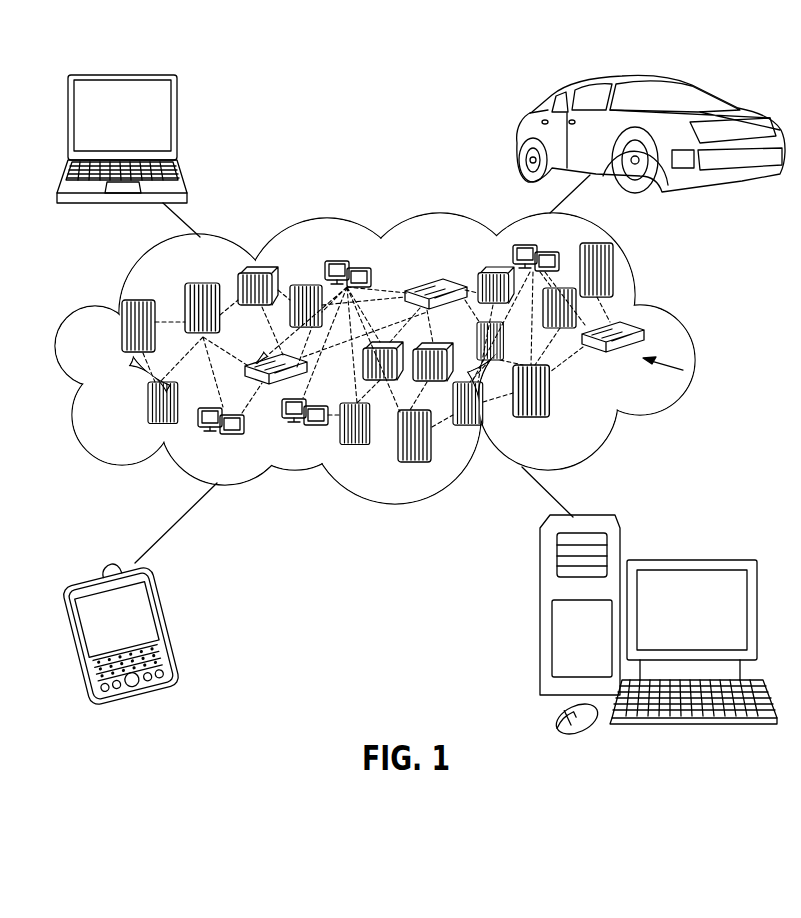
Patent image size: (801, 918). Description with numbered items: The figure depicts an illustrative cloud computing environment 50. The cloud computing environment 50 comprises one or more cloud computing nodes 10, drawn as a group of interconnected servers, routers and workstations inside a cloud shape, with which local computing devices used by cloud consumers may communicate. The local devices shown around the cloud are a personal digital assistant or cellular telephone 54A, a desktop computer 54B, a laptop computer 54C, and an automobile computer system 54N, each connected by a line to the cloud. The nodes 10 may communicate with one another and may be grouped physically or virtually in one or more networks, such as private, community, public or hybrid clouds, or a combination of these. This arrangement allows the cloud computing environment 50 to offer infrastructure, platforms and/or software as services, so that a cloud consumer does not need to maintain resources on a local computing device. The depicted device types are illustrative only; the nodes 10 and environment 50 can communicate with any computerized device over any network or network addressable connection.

The cloud computing nodes 10 is at (663, 372).
The cloud computing environment 50 is at (691, 336).
The personal digital assistant or cellular telephone 54A is at (172, 633).
The desktop computer 54B is at (690, 560).
The laptop computer 54C is at (178, 122).
The automobile computer system 54N is at (518, 136).